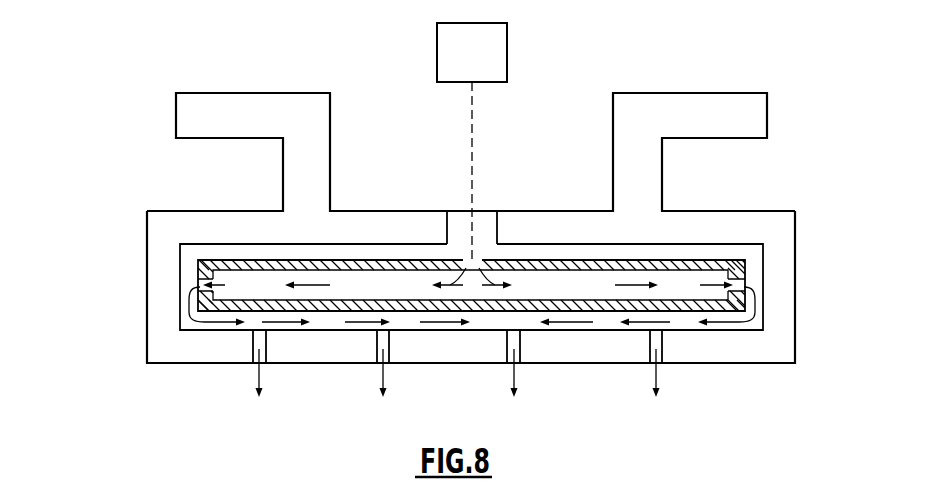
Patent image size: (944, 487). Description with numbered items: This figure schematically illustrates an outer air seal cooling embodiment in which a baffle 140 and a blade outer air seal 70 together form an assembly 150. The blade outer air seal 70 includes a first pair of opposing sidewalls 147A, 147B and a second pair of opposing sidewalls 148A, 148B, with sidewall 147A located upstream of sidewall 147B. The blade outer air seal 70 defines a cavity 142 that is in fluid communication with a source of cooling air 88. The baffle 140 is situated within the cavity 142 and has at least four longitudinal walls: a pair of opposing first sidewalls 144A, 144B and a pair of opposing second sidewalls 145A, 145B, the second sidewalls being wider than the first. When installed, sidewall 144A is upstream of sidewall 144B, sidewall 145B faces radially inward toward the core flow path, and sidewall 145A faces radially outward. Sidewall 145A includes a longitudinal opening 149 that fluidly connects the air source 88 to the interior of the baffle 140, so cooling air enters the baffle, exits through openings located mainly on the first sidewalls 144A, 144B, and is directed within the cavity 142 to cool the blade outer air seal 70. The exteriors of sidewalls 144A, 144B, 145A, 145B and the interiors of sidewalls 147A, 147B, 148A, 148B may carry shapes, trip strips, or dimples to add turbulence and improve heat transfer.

The assembly 150 is at (104, 166).
The source of cooling air 88 is at (485, 63).
The blade outer air seal 70 is at (747, 222).
The second sidewall 148A is at (385, 223).
The second sidewall 148B is at (733, 352).
The longitudinal opening 149 is at (475, 262).
The baffle 140 is at (470, 279).
The second sidewall of baffle 145A is at (670, 260).
The second sidewall of baffle 145B is at (670, 310).
The first sidewall of baffle 144A is at (197, 272).
The first sidewall of baffle 144B is at (745, 272).
The first sidewall 147A is at (168, 312).
The first sidewall 147B is at (780, 297).
The cavity 142 is at (170, 268).